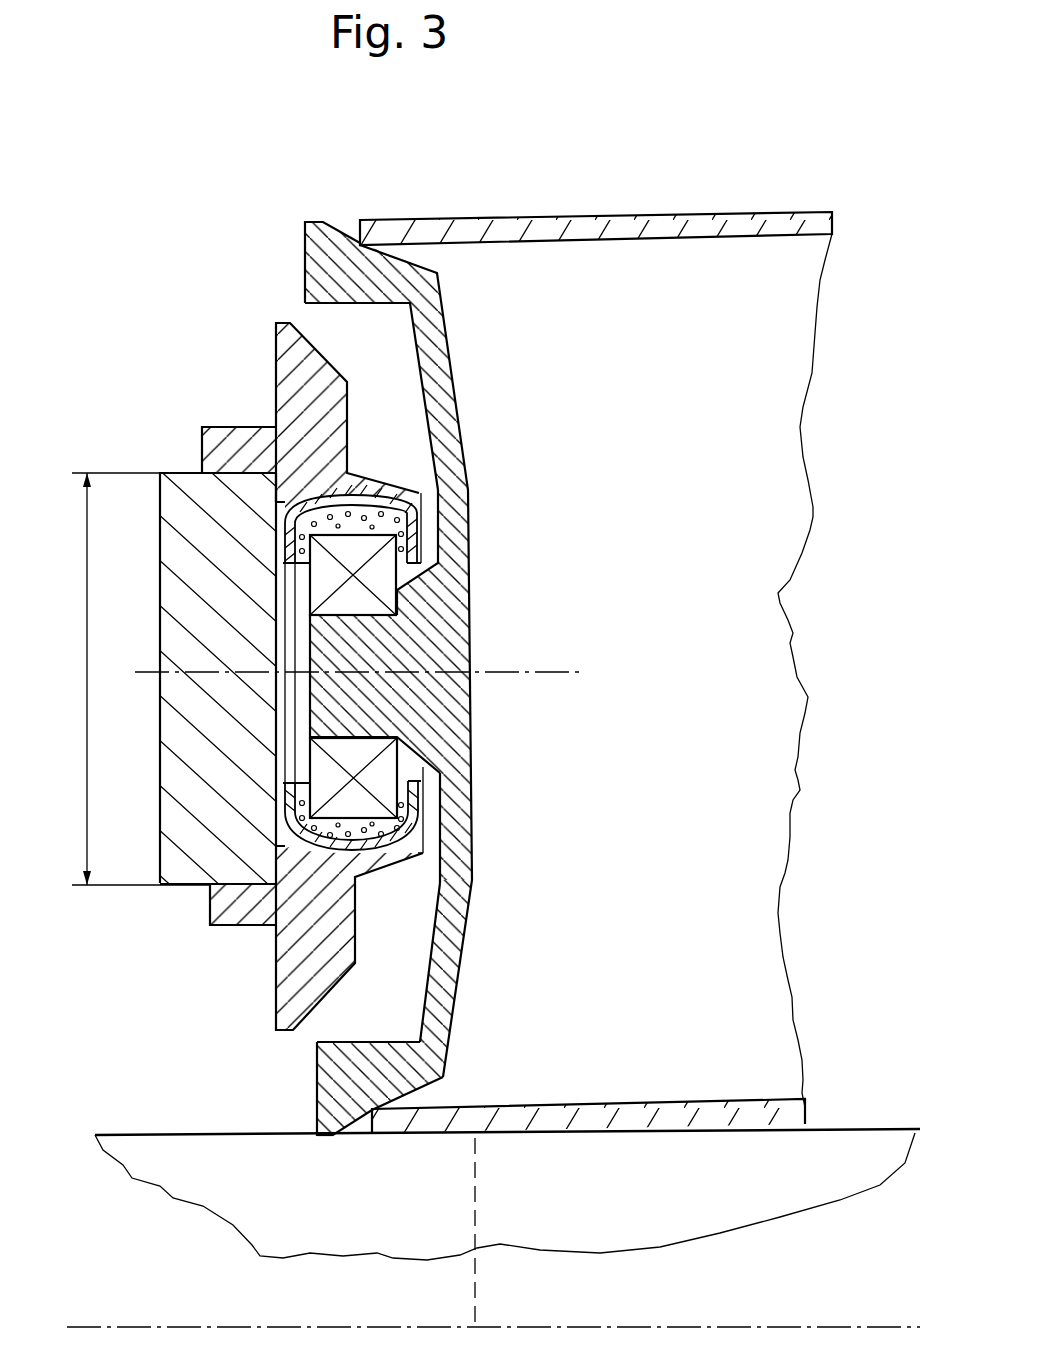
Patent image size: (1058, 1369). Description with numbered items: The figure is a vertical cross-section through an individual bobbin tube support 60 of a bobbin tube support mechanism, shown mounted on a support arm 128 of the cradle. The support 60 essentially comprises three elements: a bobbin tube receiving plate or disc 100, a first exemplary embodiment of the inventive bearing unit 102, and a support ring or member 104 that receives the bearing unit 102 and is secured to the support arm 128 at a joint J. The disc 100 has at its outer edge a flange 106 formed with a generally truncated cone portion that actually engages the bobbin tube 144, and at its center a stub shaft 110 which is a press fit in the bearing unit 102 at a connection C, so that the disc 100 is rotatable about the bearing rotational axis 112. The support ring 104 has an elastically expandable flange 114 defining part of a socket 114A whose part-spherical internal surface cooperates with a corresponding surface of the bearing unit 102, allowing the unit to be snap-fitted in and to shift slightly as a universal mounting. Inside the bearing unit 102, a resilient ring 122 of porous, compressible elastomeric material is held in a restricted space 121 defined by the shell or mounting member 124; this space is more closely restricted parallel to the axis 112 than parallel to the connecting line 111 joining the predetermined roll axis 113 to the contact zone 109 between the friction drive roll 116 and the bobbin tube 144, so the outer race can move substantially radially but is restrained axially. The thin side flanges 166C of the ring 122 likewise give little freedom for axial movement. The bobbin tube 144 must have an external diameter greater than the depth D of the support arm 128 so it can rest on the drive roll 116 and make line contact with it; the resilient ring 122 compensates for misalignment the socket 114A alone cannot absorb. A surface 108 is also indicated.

The bobbin tube support 60 is at (288, 296).
The bobbin tube receiving plate or disc 100 is at (445, 364).
The bearing unit 102 is at (438, 527).
The support ring or member 104 is at (283, 362).
The flange 106 is at (323, 1092).
The bottom surface of ring 108 is at (358, 1144).
The contact zone 109 is at (640, 1062).
The stub shaft 110 is at (452, 744).
The connecting line 111 is at (475, 1250).
The bearing rotational axis 112 is at (575, 668).
The predetermined roll axis 113 is at (110, 1327).
The flange 114 is at (370, 490).
The socket 114A is at (383, 500).
The friction drive roll 116 is at (160, 1148).
The restricted space 121 is at (283, 503).
The resilient means or ring 122 is at (420, 541).
The shell or mounting member 124 is at (428, 497).
The support arm 128 is at (190, 641).
The bobbin tube 144 is at (712, 225).
The side flanges 166C is at (421, 556).
The joint J is at (217, 489).
The connection C is at (392, 629).
The depth D is at (128, 679).